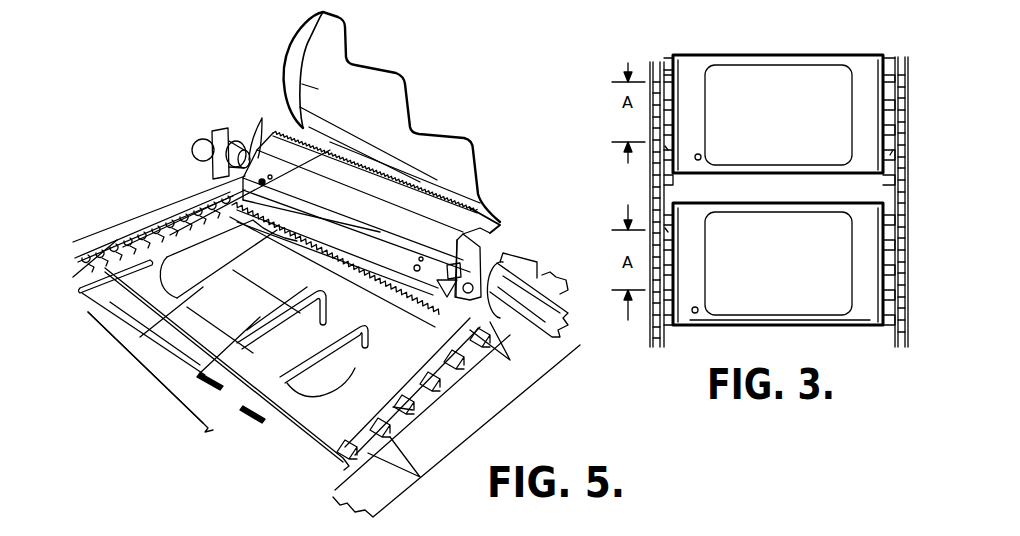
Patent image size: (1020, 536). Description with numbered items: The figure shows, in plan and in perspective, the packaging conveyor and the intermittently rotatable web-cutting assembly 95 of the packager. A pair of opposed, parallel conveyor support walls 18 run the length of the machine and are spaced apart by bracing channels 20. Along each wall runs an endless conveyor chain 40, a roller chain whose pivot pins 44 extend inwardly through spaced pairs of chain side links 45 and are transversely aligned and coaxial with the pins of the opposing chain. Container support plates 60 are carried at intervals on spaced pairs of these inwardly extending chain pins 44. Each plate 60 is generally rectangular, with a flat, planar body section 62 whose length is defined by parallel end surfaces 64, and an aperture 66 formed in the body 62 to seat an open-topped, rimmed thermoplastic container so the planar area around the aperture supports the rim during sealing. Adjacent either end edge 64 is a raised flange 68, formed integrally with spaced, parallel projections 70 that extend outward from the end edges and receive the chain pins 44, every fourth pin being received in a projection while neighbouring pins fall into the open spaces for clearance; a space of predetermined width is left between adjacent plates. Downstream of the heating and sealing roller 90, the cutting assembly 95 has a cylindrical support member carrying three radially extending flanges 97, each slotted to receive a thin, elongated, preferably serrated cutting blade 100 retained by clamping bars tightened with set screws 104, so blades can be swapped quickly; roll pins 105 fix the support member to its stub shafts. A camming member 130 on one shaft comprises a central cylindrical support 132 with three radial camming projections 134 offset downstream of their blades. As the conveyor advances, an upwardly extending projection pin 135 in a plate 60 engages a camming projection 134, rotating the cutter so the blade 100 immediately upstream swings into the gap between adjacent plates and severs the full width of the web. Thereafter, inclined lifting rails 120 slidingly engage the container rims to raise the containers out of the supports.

In FIG. 5, the conveyor support walls 18 is at (163, 193).
In FIG. 5, the bracing channels 20 is at (250, 298).
In FIG. 5, the endless conveyor chain 40 is at (134, 231).
In FIG. 3, the endless conveyor chain 40 is at (646, 337).
In FIG. 5, the pivot pins 44 is at (108, 260).
In FIG. 3, the pivot pins 44 is at (890, 195).
In FIG. 5, the chain side links 45 is at (183, 205).
In FIG. 5, the container support plate 60 is at (273, 424).
In FIG. 3, the container support plate 60 is at (854, 53).
In FIG. 5, the body section 62 is at (185, 262).
In FIG. 3, the body section 62 is at (763, 323).
In FIG. 5, the end surfaces 64 is at (370, 422).
In FIG. 3, the end surfaces 64 is at (670, 62).
In FIG. 5, the aperture 66 is at (193, 297).
In FIG. 3, the aperture 66 is at (753, 66).
In FIG. 5, the raised flange 68 is at (213, 232).
In FIG. 3, the raised flange 68 is at (688, 72).
In FIG. 5, the projections 70 is at (447, 408).
In FIG. 3, the projections 70 is at (668, 75).
In FIG. 5, the heating and sealing roller 90 is at (303, 34).
In FIG. 5, the cutting assembly 95 is at (244, 110).
In FIG. 5, the flanges 97 is at (262, 118).
In FIG. 5, the cutting blade 100 is at (318, 250).
In FIG. 5, the set screws 104 is at (265, 180).
In FIG. 5, the roll pins 105 is at (337, 147).
In FIG. 5, the inclined lifting rails 120 is at (333, 305).
In FIG. 5, the camming member 130 is at (507, 265).
In FIG. 5, the cylindrical support 132 is at (497, 228).
In FIG. 5, the camming projections 134 is at (440, 300).
In FIG. 3, the projection pin 135 is at (701, 156).